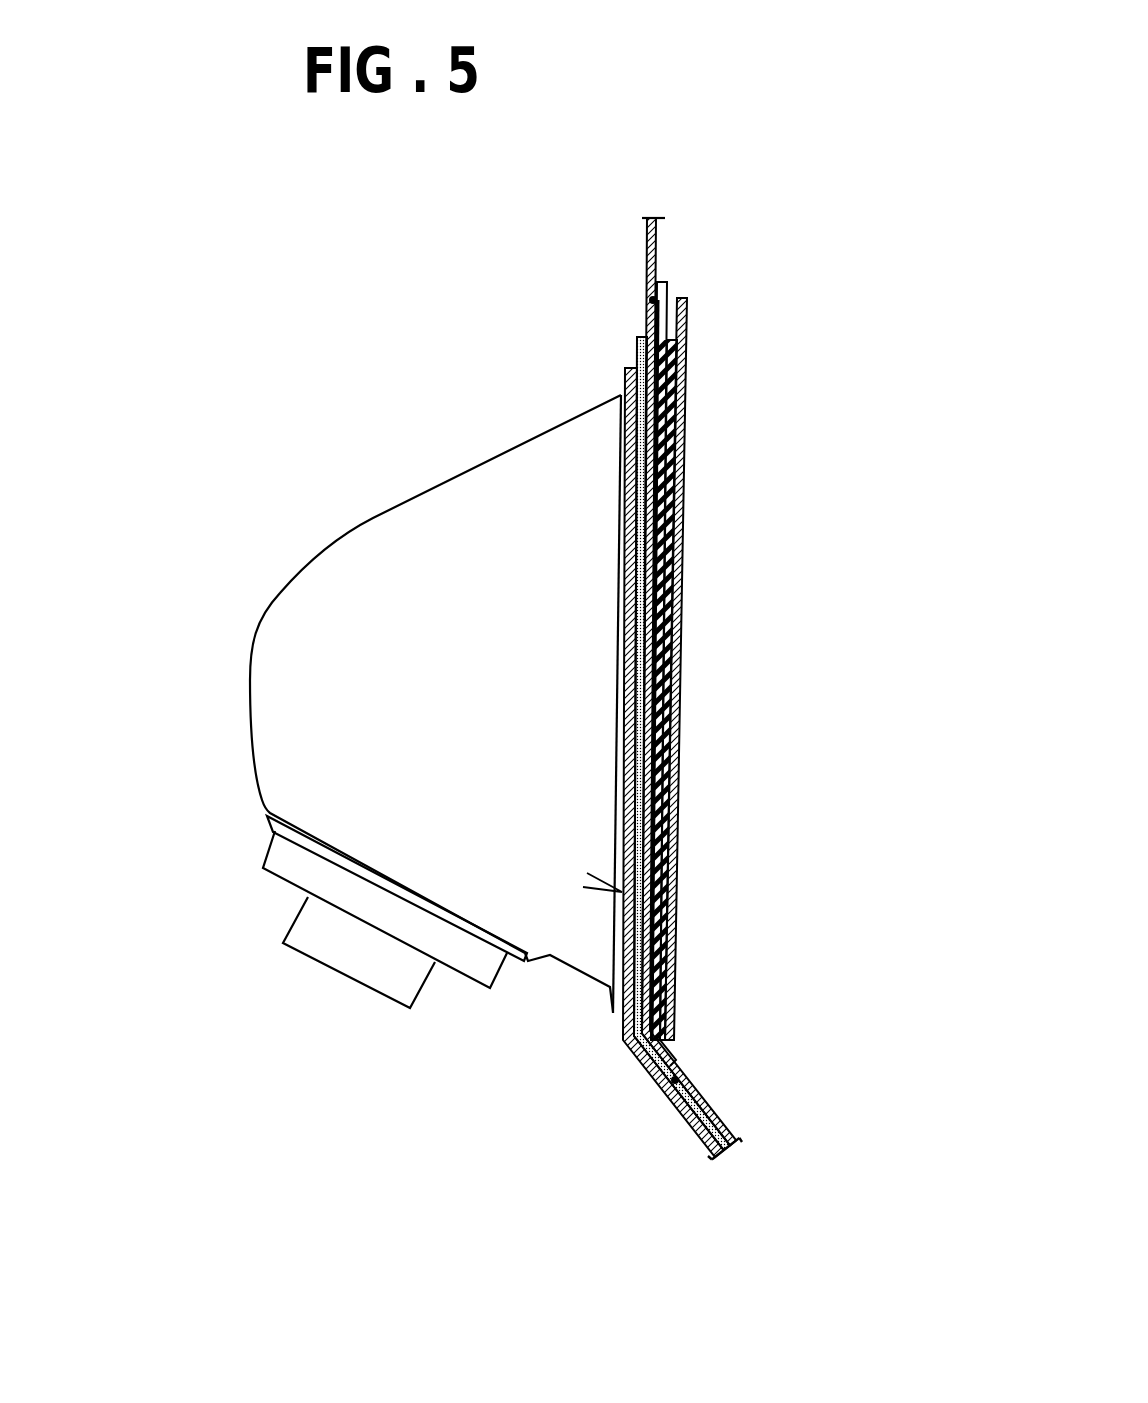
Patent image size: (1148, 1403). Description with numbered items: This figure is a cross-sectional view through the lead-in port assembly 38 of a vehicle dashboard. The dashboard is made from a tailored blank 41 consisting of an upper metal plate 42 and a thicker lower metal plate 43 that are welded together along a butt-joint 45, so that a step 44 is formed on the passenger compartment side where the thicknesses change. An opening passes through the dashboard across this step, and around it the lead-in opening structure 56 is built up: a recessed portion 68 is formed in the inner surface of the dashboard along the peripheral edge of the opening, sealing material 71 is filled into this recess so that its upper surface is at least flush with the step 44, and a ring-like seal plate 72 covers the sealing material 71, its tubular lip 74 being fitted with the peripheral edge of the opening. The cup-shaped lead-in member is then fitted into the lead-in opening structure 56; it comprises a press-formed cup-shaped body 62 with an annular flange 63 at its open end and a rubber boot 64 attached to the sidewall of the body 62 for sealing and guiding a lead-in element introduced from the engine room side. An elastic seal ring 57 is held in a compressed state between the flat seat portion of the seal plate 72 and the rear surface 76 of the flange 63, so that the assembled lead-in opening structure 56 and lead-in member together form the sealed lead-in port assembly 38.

The lead-in port assembly 38 is at (378, 683).
The tailored blank 41 is at (642, 584).
The upper metal plate 42 is at (645, 238).
The lower metal plate 43 is at (693, 1127).
The step 44 is at (673, 882).
The butt-joint 45 is at (620, 892).
The lead-in opening structure 56 is at (642, 644).
The seal ring 57 is at (674, 437).
The cup-shaped body 62 is at (293, 573).
The flange 63 is at (687, 357).
The rubber boot 64 is at (303, 953).
The recessed portion 68 is at (637, 337).
The sealing material 71 is at (648, 527).
The seal plate 72 is at (657, 283).
The tubular lip 74 is at (625, 367).
The rear surface 76 is at (673, 298).